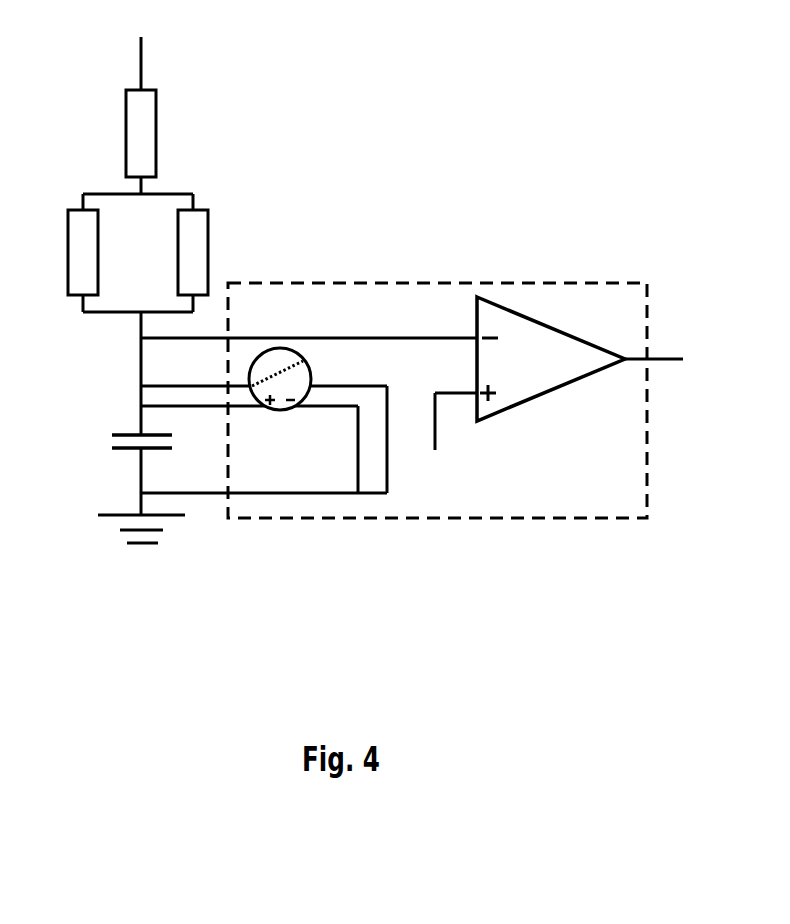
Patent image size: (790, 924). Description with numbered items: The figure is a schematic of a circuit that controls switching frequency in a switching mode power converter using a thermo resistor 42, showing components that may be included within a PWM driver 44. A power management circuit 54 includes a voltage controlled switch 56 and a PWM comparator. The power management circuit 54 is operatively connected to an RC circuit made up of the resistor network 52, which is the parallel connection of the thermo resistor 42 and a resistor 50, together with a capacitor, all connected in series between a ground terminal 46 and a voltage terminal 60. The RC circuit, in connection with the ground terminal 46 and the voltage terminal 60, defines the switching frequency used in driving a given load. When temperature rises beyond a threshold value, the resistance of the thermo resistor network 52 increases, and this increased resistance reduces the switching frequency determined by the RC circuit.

The voltage terminal 60 is at (141, 51).
The power management circuit 54 is at (122, 142).
The resistor network 52 is at (142, 227).
The resistor 50 is at (67, 252).
The thermo resistor 42 is at (210, 252).
The voltage controlled switch 56 is at (301, 354).
The ground terminal 46 is at (138, 507).
The PWM driver 44 is at (333, 518).